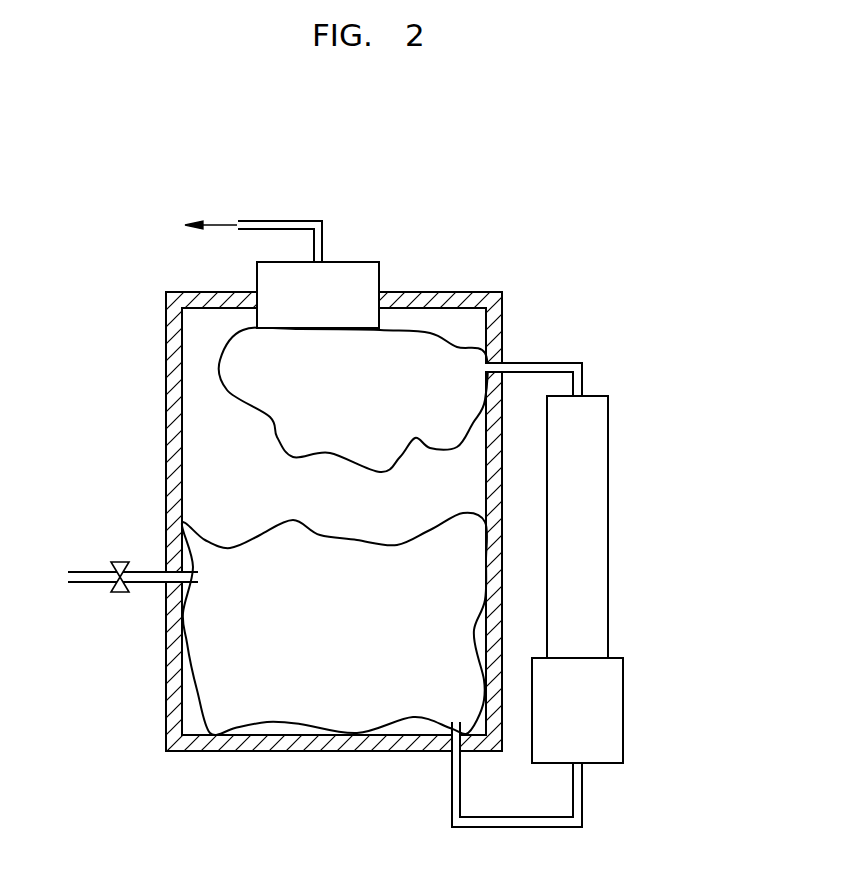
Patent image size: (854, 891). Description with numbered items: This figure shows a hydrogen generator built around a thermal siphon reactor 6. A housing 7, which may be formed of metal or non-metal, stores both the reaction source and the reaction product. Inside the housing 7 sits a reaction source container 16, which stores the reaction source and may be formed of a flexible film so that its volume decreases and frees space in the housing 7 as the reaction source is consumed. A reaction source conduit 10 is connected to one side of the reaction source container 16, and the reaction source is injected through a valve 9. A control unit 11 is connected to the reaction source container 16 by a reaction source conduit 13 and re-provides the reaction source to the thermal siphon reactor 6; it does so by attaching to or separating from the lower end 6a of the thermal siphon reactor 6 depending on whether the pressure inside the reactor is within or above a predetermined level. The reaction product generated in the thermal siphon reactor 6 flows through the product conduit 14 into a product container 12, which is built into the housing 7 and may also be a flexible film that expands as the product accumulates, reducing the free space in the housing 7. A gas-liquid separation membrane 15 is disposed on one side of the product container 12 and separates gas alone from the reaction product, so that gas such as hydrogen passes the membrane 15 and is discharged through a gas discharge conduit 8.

The thermal siphon reactor 6 is at (595, 450).
The lower end of the thermal siphon reactor 6a is at (582, 655).
The housing 7 is at (430, 297).
The gas discharge conduit 8 is at (297, 223).
The valve 9 is at (122, 562).
The reaction source conduit 10 is at (93, 577).
The control unit 11 is at (617, 710).
The product container 12 is at (238, 378).
The reaction source conduit 13 is at (520, 828).
The product conduit 14 is at (563, 363).
The gas-liquid separation membrane 15 is at (342, 277).
The reaction source container 16 is at (220, 678).